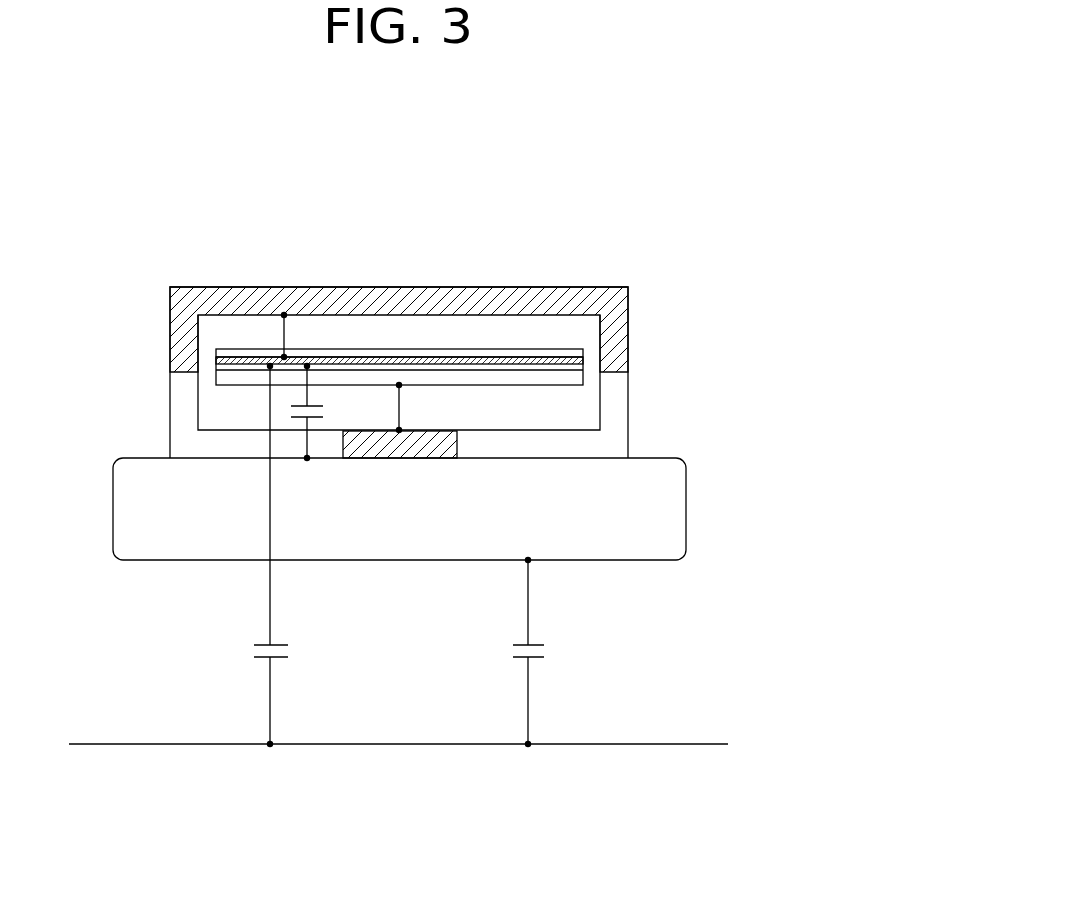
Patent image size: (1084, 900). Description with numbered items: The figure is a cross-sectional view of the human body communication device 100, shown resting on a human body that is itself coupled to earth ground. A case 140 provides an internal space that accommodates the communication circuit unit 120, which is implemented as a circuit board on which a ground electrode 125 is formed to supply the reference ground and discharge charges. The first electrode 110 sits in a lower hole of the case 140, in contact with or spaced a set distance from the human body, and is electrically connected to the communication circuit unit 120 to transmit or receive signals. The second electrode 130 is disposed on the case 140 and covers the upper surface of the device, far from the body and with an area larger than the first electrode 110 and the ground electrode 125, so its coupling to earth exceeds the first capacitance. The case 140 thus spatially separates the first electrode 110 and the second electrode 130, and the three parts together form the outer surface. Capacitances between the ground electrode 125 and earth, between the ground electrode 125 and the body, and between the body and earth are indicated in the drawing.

The human body communication device 100 is at (778, 172).
The first electrode 110 is at (437, 427).
The communication circuit unit 120 is at (443, 349).
The ground electrode 125 is at (518, 358).
The second electrode 130 is at (618, 319).
The case 140 is at (617, 413).